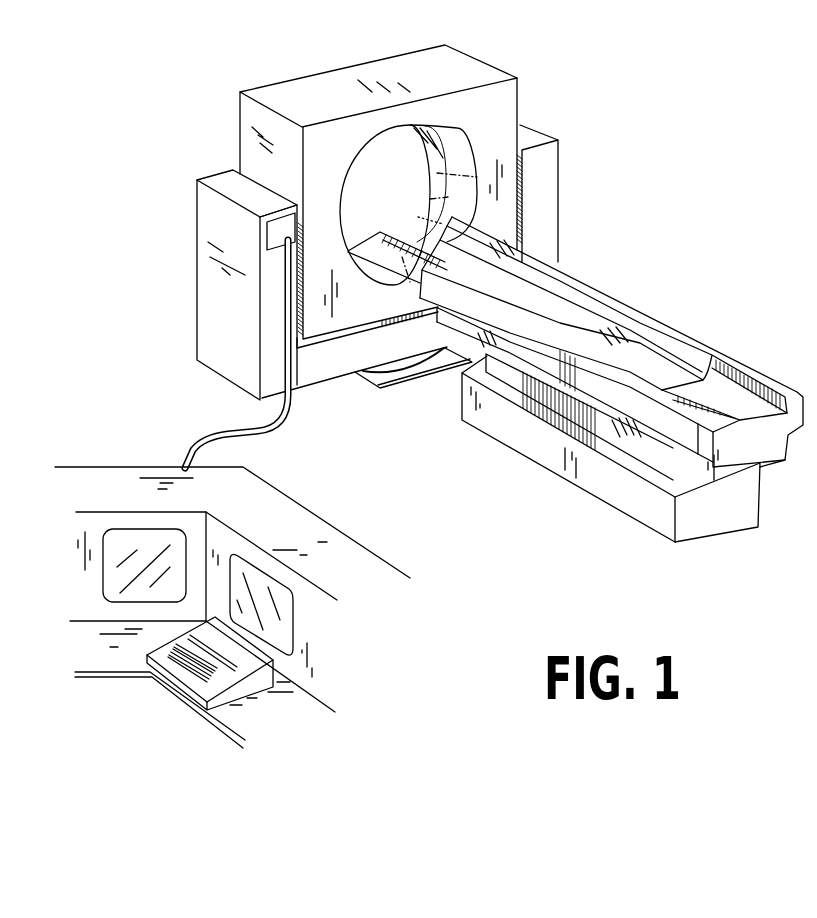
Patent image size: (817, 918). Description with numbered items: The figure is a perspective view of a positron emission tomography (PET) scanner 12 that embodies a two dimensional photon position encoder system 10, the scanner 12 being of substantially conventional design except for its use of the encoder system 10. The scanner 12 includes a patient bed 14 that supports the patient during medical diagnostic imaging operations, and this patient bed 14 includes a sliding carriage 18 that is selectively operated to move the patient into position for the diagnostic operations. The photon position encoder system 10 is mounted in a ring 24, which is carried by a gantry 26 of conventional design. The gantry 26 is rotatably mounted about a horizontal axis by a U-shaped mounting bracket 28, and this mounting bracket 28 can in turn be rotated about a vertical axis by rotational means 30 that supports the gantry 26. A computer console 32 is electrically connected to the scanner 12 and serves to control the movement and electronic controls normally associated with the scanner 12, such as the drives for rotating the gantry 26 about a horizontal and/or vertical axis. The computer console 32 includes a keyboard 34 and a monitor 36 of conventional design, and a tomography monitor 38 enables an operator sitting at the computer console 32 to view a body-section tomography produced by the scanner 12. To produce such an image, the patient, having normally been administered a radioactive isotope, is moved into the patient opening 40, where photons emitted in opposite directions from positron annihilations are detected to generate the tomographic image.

The two dimensional photon position encoder system 10 is at (437, 190).
The positron emission tomography scanner 12 is at (634, 241).
The patient bed 14 is at (508, 425).
The sliding carriage 18 is at (680, 350).
The ring 24 is at (465, 154).
The gantry 26 is at (507, 92).
The U-shaped mounting bracket 28 is at (543, 195).
The rotational means 30 is at (358, 375).
The computer console 32 is at (289, 520).
The keyboard 34 is at (255, 683).
The monitor 36 is at (287, 617).
The tomography monitor 38 is at (112, 577).
The patient opening 40 is at (381, 158).